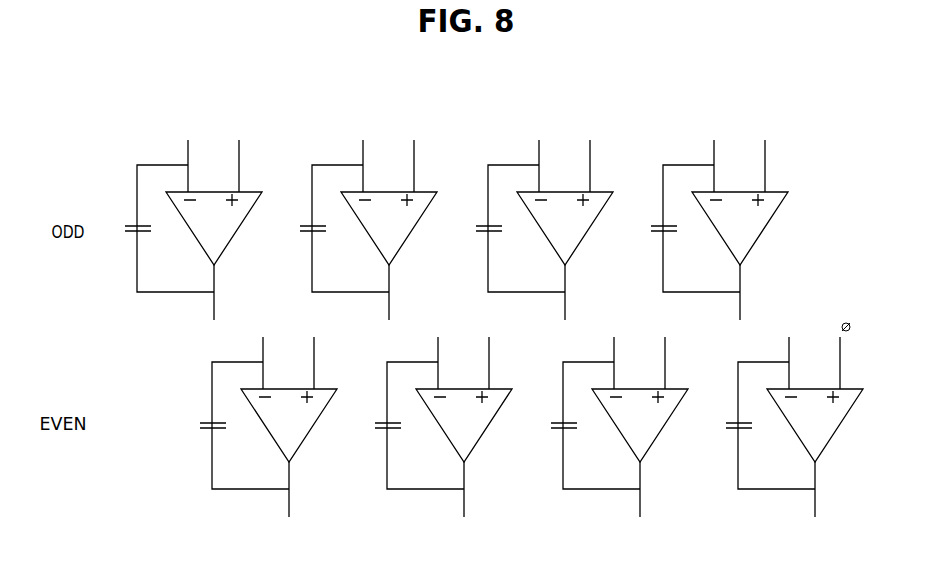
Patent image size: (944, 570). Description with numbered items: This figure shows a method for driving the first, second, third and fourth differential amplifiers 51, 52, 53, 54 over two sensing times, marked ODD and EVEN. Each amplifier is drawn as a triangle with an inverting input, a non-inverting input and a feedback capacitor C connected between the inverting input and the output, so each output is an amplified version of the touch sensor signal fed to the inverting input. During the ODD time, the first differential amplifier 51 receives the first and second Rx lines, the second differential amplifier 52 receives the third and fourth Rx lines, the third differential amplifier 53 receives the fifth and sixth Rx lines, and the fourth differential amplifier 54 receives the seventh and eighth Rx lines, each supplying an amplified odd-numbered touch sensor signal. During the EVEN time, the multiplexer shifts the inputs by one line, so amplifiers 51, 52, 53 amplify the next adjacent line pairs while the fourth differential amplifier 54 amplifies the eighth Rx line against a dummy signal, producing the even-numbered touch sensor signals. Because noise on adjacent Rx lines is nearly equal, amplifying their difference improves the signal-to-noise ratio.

The first differential amplifier 51 is at (263, 192).
The second differential amplifier 52 is at (438, 192).
The third differential amplifier 53 is at (614, 192).
The fourth differential amplifier 54 is at (789, 192).